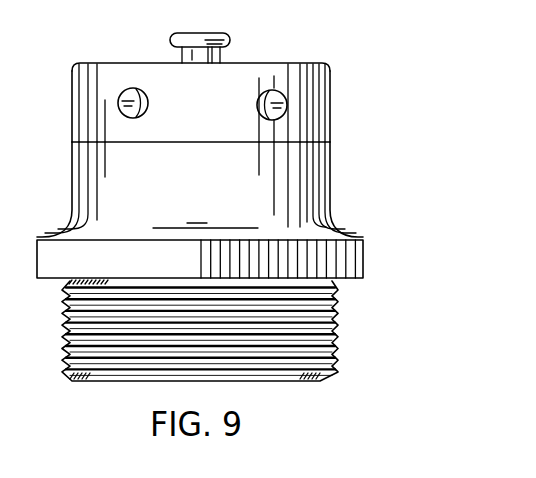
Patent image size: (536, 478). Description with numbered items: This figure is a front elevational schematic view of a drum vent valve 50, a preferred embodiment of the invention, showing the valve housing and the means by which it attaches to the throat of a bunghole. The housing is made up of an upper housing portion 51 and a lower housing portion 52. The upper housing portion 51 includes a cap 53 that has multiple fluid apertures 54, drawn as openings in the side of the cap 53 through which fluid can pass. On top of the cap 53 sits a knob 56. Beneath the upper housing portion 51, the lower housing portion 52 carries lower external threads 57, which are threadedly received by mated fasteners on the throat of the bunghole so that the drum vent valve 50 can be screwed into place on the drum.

The drum vent valve 50 is at (345, 53).
The upper housing portion 51 is at (330, 102).
The lower housing portion 52 is at (330, 168).
The cap 53 is at (95, 63).
The fluid apertures 54 is at (128, 90).
The knob 56 is at (223, 36).
The lower external threads 57 is at (338, 313).